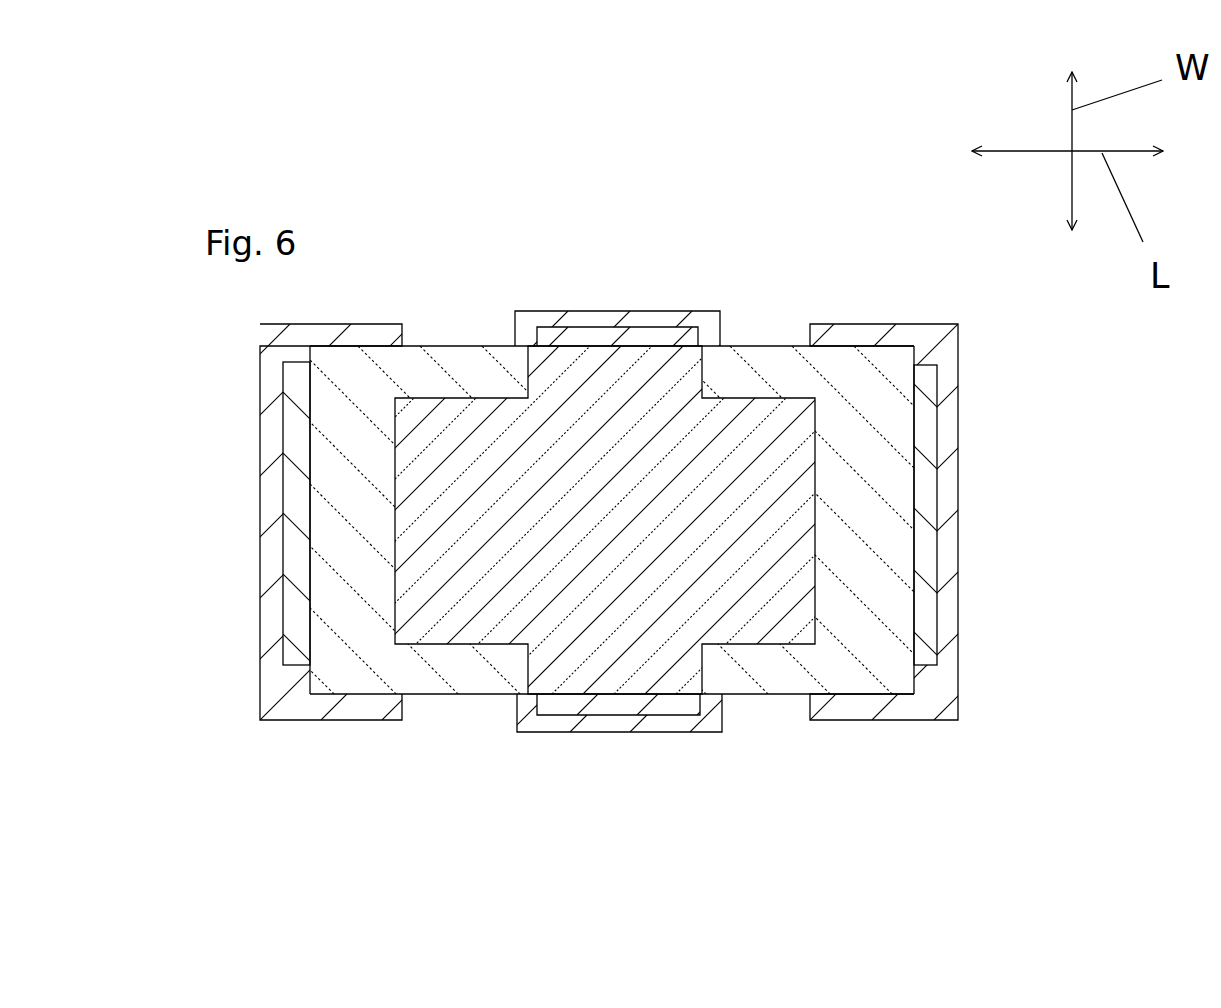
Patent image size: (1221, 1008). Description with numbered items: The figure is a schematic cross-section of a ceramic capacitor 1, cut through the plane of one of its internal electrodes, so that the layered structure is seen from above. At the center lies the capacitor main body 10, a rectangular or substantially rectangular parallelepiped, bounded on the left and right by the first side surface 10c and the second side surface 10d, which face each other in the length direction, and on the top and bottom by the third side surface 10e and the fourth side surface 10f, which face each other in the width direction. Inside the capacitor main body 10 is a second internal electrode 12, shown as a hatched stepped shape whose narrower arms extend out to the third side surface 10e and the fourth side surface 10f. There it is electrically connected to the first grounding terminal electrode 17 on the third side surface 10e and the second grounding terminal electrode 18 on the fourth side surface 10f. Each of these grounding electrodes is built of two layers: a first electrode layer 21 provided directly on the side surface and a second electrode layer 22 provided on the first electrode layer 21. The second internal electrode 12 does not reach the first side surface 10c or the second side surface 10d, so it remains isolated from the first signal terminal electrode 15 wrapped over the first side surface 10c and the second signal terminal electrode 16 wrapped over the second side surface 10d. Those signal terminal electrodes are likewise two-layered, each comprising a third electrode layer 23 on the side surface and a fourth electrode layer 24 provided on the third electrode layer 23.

The ceramic capacitor 1 is at (878, 302).
The capacitor main body 10 is at (749, 340).
The first side surface 10c is at (310, 604).
The second side surface 10d is at (915, 588).
The third side surface 10e is at (478, 346).
The fourth side surface 10f is at (425, 694).
The second internal electrode 12 is at (739, 644).
The first signal terminal electrode 15 is at (240, 413).
The second signal terminal electrode 16 is at (962, 343).
The first grounding terminal electrode 17 is at (553, 303).
The second grounding terminal electrode 18 is at (574, 737).
The first electrode layer 21 is at (632, 325).
The second electrode layer 22 is at (679, 311).
The third electrode layer 23 is at (938, 412).
The fourth electrode layer 24 is at (960, 512).